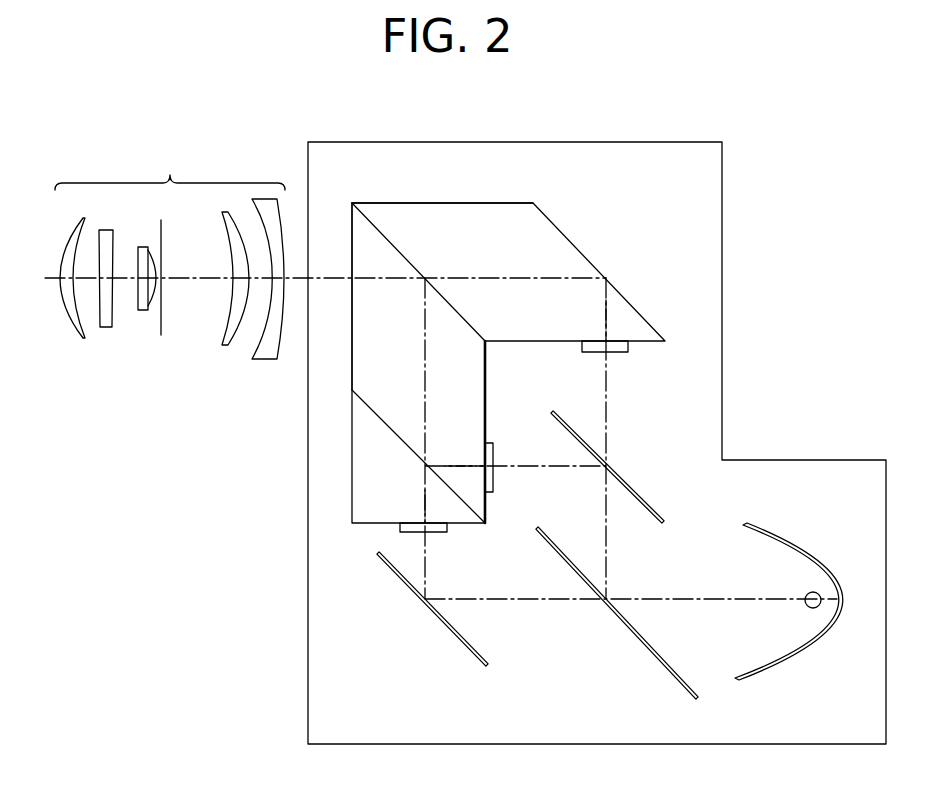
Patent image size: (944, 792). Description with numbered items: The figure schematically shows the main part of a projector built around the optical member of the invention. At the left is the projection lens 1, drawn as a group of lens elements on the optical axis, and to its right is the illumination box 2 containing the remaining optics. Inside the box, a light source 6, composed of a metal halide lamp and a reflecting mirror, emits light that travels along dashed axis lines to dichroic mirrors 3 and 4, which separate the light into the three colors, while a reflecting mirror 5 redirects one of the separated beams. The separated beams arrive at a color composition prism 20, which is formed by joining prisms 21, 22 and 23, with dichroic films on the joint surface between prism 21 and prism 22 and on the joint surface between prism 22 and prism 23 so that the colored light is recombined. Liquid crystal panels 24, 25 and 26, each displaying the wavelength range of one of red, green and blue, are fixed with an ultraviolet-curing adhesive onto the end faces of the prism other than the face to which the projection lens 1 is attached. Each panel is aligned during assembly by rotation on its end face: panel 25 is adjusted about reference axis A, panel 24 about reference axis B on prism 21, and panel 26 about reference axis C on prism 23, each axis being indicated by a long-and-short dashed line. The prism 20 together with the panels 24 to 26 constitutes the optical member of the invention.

The projection lens 1 is at (170, 251).
The illumination box 2 is at (568, 141).
The dichroic mirror 3 is at (663, 512).
The dichroic mirror 4 is at (662, 668).
The reflecting mirror 5 is at (475, 662).
The light source 6 is at (818, 537).
The color composition prism 20 is at (580, 232).
The prism 21 is at (483, 203).
The prism 22 is at (352, 218).
The prism 23 is at (355, 460).
The liquid crystal panel 24 is at (628, 353).
The liquid crystal panel 25 is at (490, 443).
The liquid crystal panel 26 is at (397, 528).
The reference axis A is at (467, 465).
The reference axis B is at (605, 321).
The reference axis C is at (423, 505).